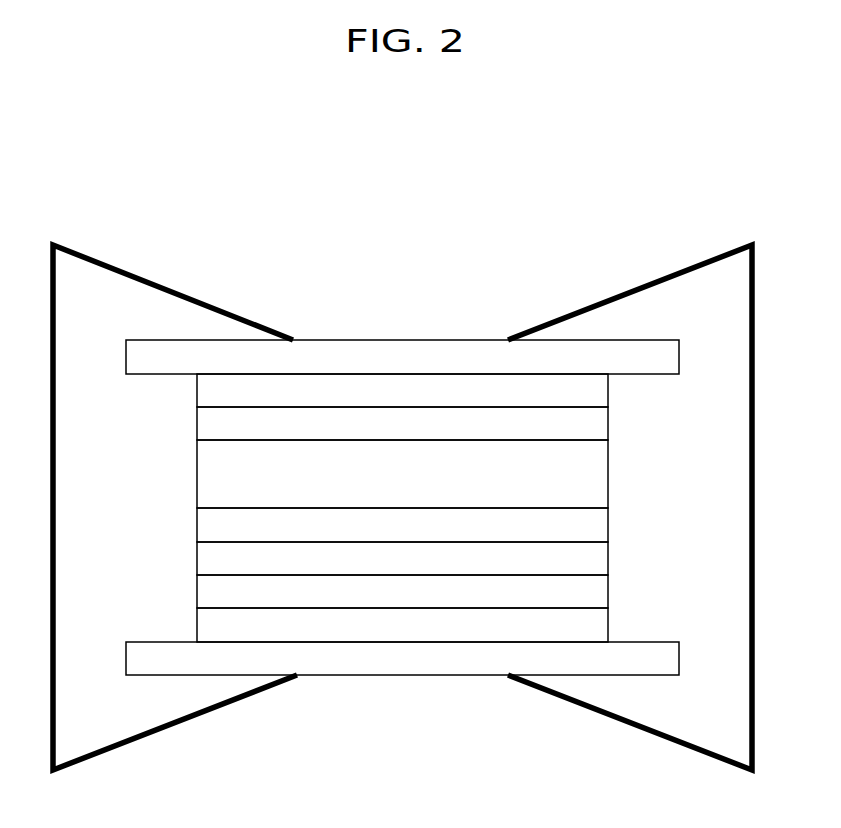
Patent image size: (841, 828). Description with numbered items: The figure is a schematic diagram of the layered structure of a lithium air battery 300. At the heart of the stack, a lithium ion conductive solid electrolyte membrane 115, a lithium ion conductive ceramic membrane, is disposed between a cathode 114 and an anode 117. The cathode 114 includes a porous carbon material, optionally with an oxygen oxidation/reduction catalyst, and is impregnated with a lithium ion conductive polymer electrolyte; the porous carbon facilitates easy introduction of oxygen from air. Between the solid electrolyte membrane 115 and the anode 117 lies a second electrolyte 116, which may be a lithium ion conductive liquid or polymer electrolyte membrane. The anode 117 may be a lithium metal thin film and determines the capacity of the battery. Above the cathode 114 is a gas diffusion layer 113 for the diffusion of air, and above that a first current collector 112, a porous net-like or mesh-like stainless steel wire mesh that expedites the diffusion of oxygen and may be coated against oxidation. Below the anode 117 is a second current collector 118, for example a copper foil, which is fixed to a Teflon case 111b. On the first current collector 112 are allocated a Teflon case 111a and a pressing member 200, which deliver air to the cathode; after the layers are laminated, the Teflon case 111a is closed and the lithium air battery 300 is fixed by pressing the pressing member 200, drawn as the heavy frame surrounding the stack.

The lithium air battery 300 is at (727, 197).
The pressing member 200 is at (603, 288).
The Teflon case 111a is at (402, 357).
The Teflon case 111b is at (402, 658).
The first current collector 112 is at (402, 390).
The gas diffusion layer 113 is at (402, 423).
The cathode 114 is at (402, 474).
The lithium ion conductive solid electrolyte membrane 115 is at (402, 525).
The second electrolyte 116 is at (402, 558).
The anode 117 is at (402, 591).
The second current collector 118 is at (402, 625).